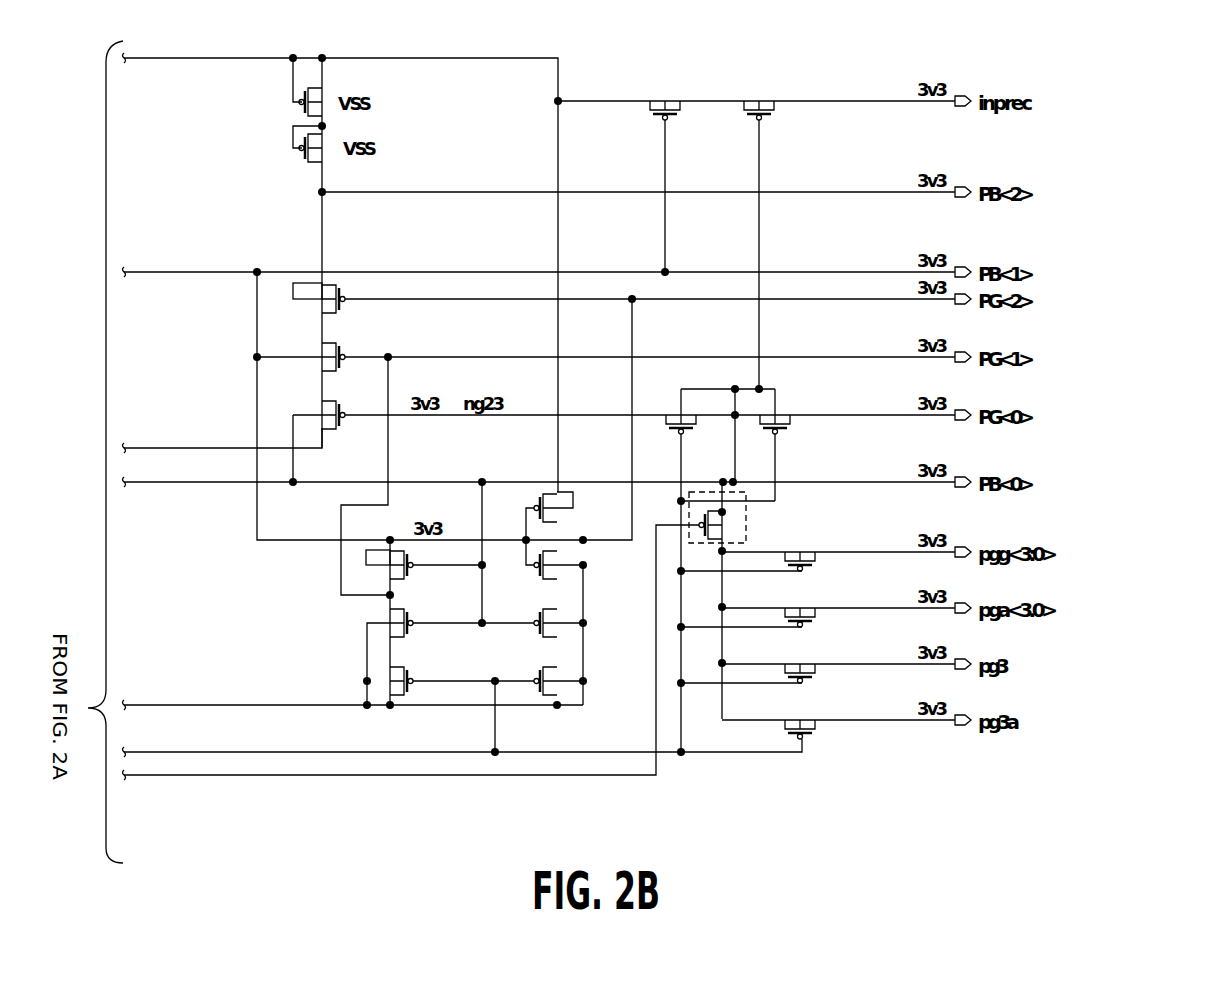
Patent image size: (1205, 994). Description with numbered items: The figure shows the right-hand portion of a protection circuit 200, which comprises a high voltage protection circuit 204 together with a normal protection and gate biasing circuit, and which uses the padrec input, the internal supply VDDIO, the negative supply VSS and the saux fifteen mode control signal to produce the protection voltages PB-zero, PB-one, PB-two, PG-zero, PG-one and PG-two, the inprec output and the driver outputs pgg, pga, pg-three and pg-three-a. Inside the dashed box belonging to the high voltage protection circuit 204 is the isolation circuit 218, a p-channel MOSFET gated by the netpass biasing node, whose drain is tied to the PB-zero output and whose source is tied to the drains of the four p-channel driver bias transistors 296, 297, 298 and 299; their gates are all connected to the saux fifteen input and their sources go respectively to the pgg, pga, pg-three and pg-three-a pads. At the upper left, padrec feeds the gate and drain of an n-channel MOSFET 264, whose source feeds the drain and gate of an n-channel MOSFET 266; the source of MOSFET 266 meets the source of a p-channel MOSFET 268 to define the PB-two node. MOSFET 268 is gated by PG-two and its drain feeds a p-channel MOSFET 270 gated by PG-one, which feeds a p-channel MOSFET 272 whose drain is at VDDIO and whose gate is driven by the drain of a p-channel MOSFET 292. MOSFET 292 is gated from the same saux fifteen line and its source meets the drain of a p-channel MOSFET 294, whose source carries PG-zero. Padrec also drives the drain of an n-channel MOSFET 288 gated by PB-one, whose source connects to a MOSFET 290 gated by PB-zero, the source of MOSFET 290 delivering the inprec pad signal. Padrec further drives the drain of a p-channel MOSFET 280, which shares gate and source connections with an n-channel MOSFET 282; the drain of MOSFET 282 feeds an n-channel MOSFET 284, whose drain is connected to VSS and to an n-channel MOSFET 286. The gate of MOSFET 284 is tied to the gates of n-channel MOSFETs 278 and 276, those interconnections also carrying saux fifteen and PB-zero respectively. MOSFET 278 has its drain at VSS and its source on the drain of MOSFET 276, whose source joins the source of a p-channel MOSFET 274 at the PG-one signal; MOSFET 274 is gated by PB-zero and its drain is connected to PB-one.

The protection circuit 200 is at (1131, 87).
The high voltage protection circuit 204 is at (748, 511).
The isolation circuit 218 is at (730, 531).
The n-channel MOSFET 264 is at (380, 102).
The n-channel MOSFET 266 is at (383, 147).
The p-channel MOSFET 268 is at (343, 290).
The p-channel MOSFET 270 is at (348, 353).
The p-channel MOSFET 272 is at (346, 424).
The p-channel MOSFET 274 is at (383, 572).
The n-channel MOSFET 276 is at (380, 614).
The n-channel MOSFET 278 is at (379, 673).
The p-channel MOSFET 280 is at (557, 513).
The n-channel MOSFET 282 is at (567, 575).
The n-channel MOSFET 284 is at (560, 635).
The n-channel MOSFET 286 is at (562, 690).
The n-channel MOSFET 288 is at (660, 96).
The n-channel MOSFET 290 is at (765, 95).
The p-channel MOSFET 292 is at (676, 413).
The p-channel MOSFET 294 is at (782, 413).
The driver bias transistor 296 is at (953, 553).
The driver bias transistor 297 is at (953, 609).
The driver bias transistor 298 is at (930, 665).
The driver bias transistor 299 is at (935, 721).